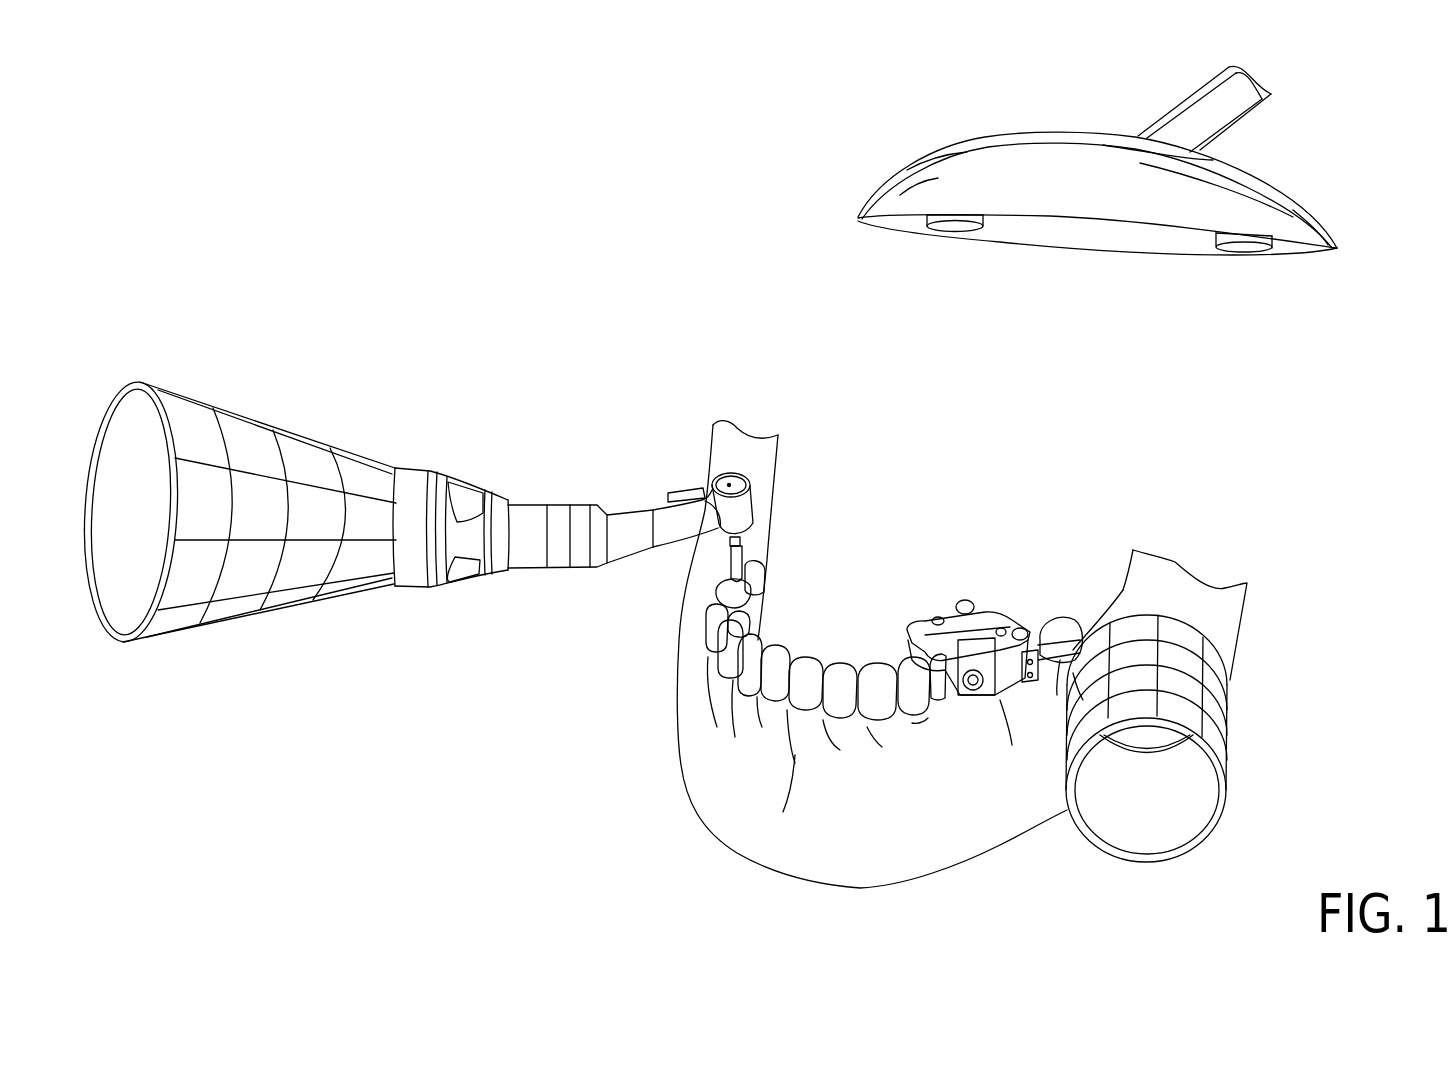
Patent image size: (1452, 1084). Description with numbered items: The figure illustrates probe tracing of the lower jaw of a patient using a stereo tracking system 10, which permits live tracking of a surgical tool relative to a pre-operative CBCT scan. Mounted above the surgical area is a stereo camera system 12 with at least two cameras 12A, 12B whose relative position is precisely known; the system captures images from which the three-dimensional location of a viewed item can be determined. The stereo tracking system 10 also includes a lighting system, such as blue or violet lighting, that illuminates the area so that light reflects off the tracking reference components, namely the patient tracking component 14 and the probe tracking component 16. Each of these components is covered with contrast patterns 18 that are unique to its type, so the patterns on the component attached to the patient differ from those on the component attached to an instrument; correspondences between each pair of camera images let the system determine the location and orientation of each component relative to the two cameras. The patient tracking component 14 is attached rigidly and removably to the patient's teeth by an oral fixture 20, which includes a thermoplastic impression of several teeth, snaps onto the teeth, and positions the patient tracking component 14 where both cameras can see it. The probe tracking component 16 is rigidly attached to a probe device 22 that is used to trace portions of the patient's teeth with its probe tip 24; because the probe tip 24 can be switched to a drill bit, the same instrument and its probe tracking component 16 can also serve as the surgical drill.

The stereo tracking system 10 is at (484, 149).
The stereo camera system 12 is at (1308, 143).
The camera 12A is at (953, 228).
The camera 12B is at (1248, 247).
The patient tracking component 14 is at (1223, 723).
The probe tracking component 16 is at (277, 437).
The contrast patterns 18 is at (303, 563).
The oral fixture 20 is at (977, 630).
The probe device 22 is at (535, 505).
The probe tip 24 is at (745, 565).